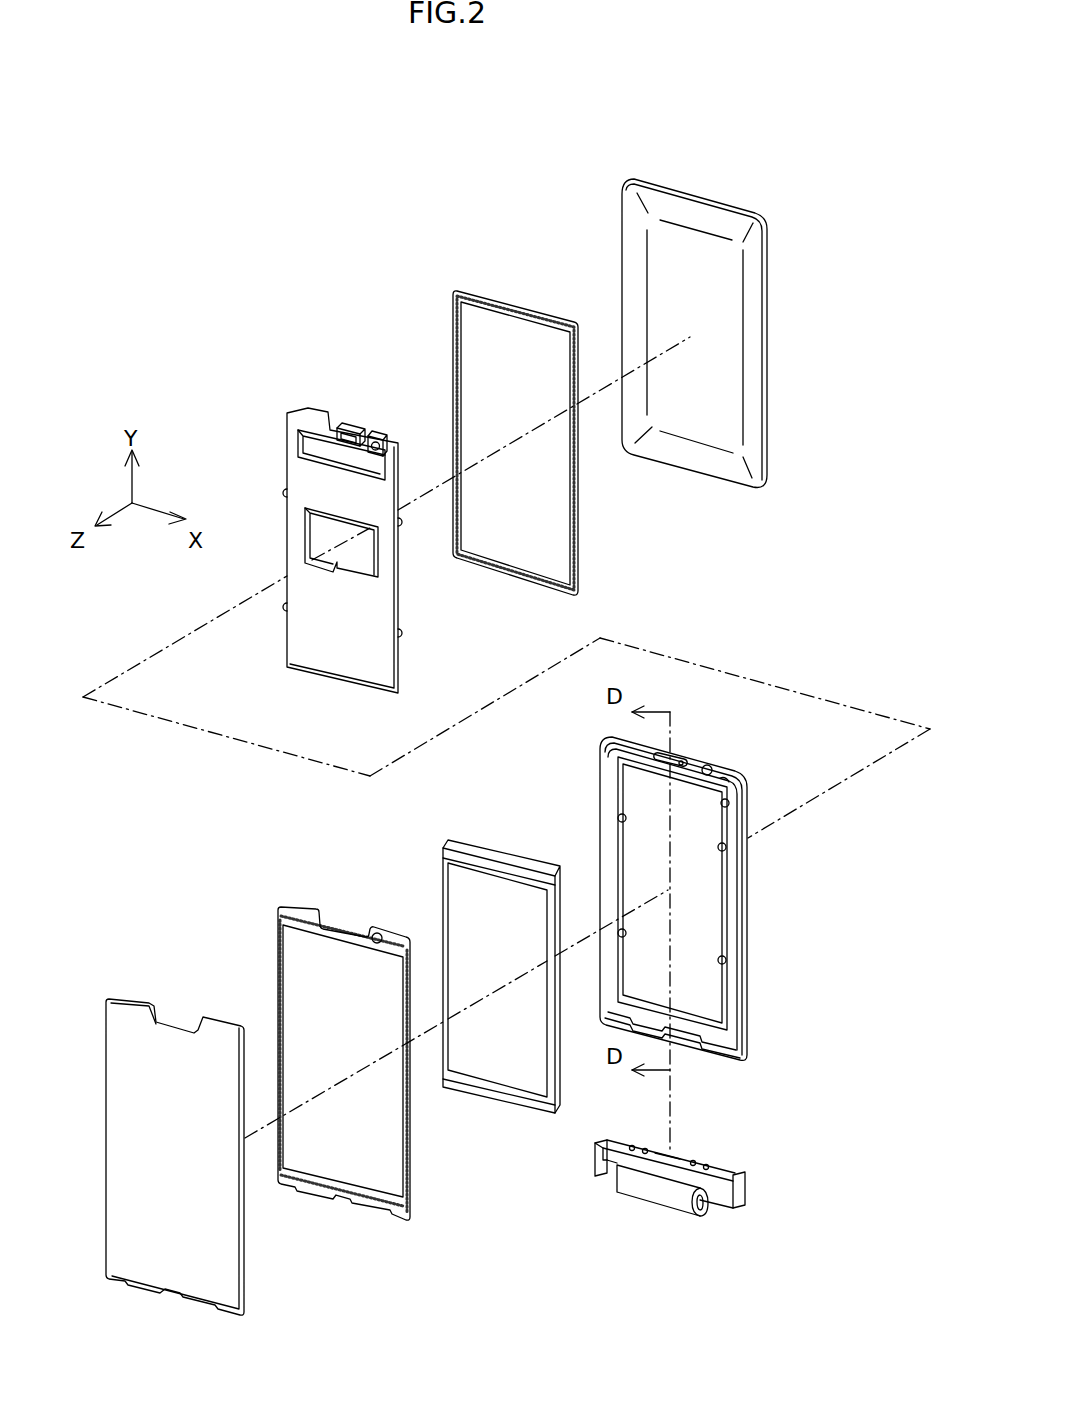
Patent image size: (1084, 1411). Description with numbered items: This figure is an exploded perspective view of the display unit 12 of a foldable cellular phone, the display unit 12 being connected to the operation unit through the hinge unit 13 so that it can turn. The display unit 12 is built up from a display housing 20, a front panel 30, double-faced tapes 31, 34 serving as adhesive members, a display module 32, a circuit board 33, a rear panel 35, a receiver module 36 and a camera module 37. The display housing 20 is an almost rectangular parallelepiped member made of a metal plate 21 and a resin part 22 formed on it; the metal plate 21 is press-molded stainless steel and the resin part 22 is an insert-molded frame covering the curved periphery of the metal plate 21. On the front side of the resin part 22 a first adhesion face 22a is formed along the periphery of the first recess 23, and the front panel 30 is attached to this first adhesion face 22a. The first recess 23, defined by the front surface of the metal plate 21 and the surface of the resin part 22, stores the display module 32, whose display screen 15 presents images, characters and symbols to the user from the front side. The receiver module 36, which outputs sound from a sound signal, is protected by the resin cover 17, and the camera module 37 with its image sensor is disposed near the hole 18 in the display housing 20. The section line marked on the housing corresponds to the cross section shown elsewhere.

The display unit 12 is at (200, 190).
The hinge unit 13 is at (757, 1177).
The display screen 15 is at (457, 908).
The cover 17 is at (688, 752).
The hole 18 is at (712, 765).
The display housing 20 is at (575, 742).
The metal plate 21 is at (714, 977).
The resin part 22 is at (760, 937).
The first adhesion face 22a is at (722, 775).
The first recess 23 is at (728, 804).
The front panel 30 is at (135, 1000).
The double-faced tape 31 is at (295, 906).
The display module 32 is at (464, 961).
The circuit board 33 is at (287, 434).
The double-faced tape 34 is at (483, 293).
The rear panel 35 is at (668, 182).
The receiver module 36 is at (345, 425).
The camera module 37 is at (373, 432).